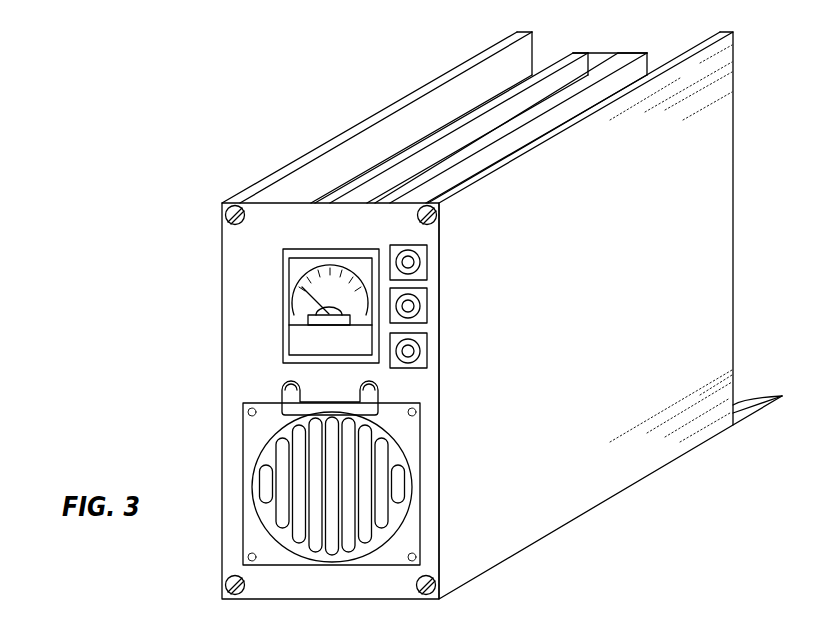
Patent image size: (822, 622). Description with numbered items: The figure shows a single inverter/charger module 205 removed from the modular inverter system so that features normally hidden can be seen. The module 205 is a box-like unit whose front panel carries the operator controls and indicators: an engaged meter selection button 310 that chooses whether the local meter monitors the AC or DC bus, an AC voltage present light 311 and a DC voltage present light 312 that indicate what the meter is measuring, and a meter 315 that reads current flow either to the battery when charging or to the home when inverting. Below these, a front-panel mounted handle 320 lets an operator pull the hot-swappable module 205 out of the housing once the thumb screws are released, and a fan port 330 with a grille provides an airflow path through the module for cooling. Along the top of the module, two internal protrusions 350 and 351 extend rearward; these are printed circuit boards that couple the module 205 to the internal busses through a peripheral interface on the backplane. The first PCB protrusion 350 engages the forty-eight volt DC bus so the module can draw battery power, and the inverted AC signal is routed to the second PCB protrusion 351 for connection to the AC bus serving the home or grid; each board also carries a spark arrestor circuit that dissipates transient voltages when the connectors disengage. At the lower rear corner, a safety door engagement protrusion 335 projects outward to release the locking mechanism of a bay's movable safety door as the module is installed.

The inverter/charger module 205 is at (178, 367).
The meter selection button 310 is at (437, 352).
The AC voltage present light 311 is at (437, 304).
The DC voltage present light 312 is at (437, 261).
The meter 315 is at (275, 300).
The handle 320 is at (392, 395).
The fan port 330 is at (427, 476).
The safety door engagement protrusion 335 is at (762, 430).
The first PCB protrusion 350 is at (576, 51).
The second PCB protrusion 351 is at (634, 51).